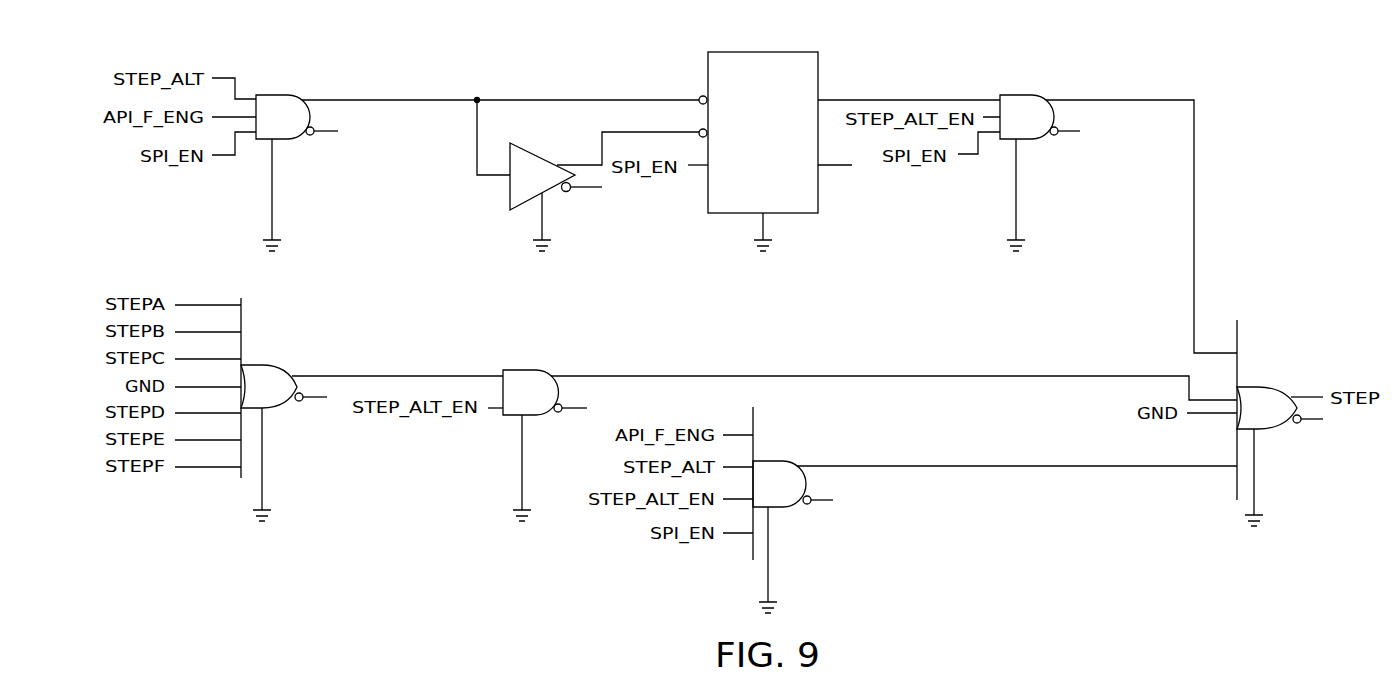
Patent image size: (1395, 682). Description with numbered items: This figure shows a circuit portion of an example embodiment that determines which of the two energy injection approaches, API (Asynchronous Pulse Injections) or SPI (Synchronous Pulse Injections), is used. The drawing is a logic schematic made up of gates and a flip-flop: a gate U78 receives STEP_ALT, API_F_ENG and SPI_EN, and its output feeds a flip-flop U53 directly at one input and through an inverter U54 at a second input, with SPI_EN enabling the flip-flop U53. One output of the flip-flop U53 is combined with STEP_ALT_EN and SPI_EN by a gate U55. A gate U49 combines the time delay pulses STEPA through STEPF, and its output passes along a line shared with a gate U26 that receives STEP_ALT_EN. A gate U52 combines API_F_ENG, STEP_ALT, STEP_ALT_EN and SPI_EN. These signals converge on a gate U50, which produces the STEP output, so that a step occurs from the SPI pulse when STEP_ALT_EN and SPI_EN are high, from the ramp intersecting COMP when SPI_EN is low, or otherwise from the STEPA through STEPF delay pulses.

The NAND gate U78 is at (297, 162).
The inverter U54 is at (556, 192).
The SR flip-flop U53 is at (758, 141).
The NAND gate U55 is at (1040, 162).
The NOR gate U49 is at (284, 409).
The NAND gate U26 is at (545, 434).
The NAND gate U52 is at (793, 510).
The NOR gate U50 is at (1280, 423).